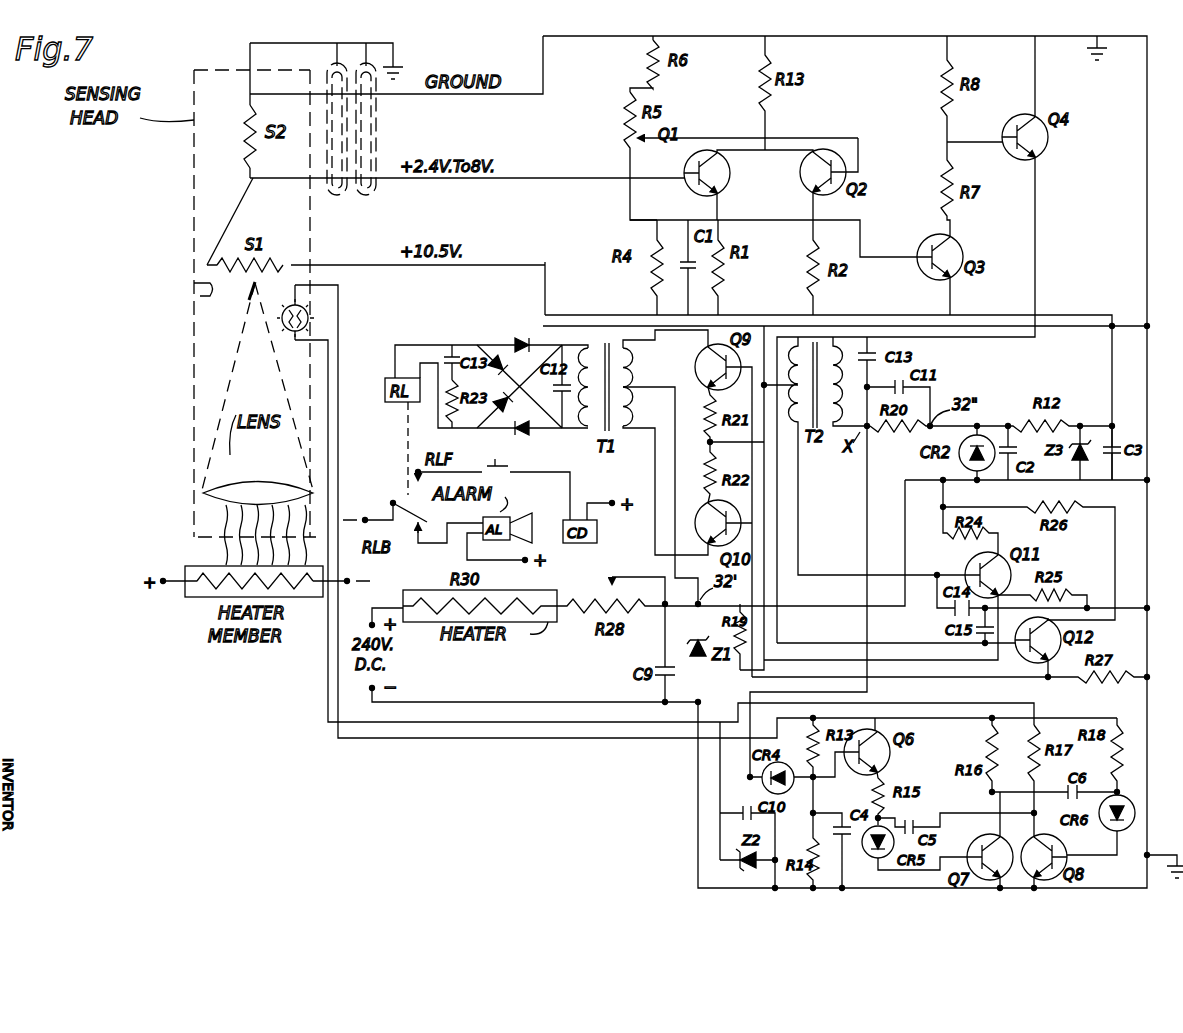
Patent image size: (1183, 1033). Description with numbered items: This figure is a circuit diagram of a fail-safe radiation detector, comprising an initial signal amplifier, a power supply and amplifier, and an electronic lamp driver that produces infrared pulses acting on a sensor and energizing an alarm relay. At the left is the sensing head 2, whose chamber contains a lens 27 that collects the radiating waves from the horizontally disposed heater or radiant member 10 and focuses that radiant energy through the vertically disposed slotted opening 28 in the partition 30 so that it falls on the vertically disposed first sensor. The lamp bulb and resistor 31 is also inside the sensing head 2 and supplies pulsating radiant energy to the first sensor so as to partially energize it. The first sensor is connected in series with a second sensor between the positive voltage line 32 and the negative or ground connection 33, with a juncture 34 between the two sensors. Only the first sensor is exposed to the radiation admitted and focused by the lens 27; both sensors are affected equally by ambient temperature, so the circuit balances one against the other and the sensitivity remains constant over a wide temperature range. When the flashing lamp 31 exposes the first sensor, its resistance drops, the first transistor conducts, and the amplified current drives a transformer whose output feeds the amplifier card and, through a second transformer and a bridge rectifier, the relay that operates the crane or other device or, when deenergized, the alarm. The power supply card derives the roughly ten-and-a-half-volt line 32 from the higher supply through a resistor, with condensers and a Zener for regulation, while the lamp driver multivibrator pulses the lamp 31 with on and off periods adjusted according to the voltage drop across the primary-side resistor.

The sensing head 2 is at (194, 215).
The heater or radiant member 10 is at (195, 578).
The lens 27 is at (243, 478).
The slotted opening 28 is at (247, 302).
The partition 30 is at (200, 293).
The lamp bulb and resistor 31 is at (314, 316).
The positive voltage line 32 is at (548, 262).
The negative or ground connection 33 is at (546, 94).
The juncture 34 is at (255, 176).